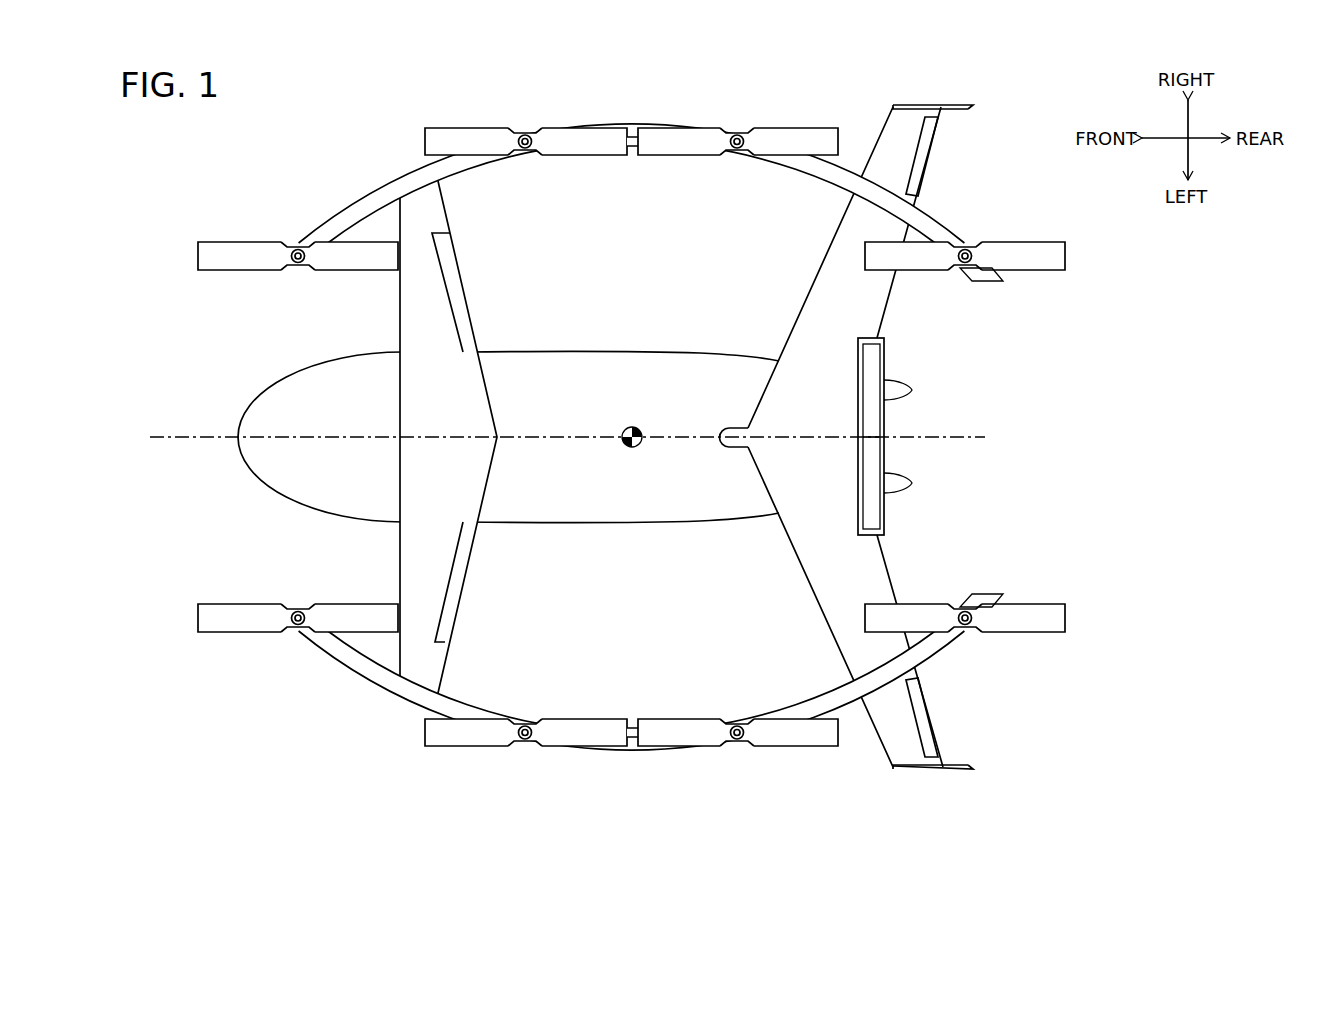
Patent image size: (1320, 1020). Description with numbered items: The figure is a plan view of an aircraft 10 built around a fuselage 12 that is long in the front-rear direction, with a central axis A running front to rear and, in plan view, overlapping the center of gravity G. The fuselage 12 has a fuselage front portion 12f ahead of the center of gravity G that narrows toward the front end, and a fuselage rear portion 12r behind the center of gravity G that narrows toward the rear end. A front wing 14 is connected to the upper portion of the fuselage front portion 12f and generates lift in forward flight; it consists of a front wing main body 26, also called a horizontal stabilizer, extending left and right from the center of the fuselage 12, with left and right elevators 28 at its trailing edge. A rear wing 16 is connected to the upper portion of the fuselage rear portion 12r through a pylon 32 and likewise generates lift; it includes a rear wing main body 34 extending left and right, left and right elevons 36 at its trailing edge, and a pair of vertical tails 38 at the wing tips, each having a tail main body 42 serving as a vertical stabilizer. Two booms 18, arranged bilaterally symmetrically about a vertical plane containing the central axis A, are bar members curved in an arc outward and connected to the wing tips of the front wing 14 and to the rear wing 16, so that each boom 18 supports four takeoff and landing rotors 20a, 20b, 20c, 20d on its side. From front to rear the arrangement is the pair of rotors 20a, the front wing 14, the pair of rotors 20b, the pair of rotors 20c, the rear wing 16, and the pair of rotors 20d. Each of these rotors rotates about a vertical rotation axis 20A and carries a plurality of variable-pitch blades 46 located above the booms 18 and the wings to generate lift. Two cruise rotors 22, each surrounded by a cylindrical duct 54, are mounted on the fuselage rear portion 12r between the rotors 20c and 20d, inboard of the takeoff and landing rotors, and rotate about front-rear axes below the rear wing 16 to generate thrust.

The aircraft 10 is at (186, 153).
The fuselage 12 is at (561, 347).
The fuselage front portion 12f is at (255, 448).
The fuselage rear portion 12r is at (760, 370).
The front wing 14 is at (397, 334).
The rear wing 16 is at (814, 260).
The boom 18 is at (358, 197).
The takeoff and landing rotor 20a is at (255, 667).
The takeoff and landing rotor 20b is at (573, 158).
The takeoff and landing rotor 20c is at (705, 158).
The takeoff and landing rotor 20d is at (1056, 273).
The rotation axis 20A is at (297, 247).
The cruise rotor 22 is at (888, 358).
The front wing main body 26 is at (417, 290).
The elevator 28 is at (450, 280).
The pylon 32 is at (722, 446).
The rear wing main body 34 is at (830, 295).
The elevon 36 is at (921, 147).
The vertical tail 38 is at (977, 104).
The tail main body 42 is at (956, 111).
The blade 46 is at (424, 141).
The cylindrical duct 54 is at (878, 341).
The central axis A is at (557, 438).
The center of gravity G is at (624, 444).